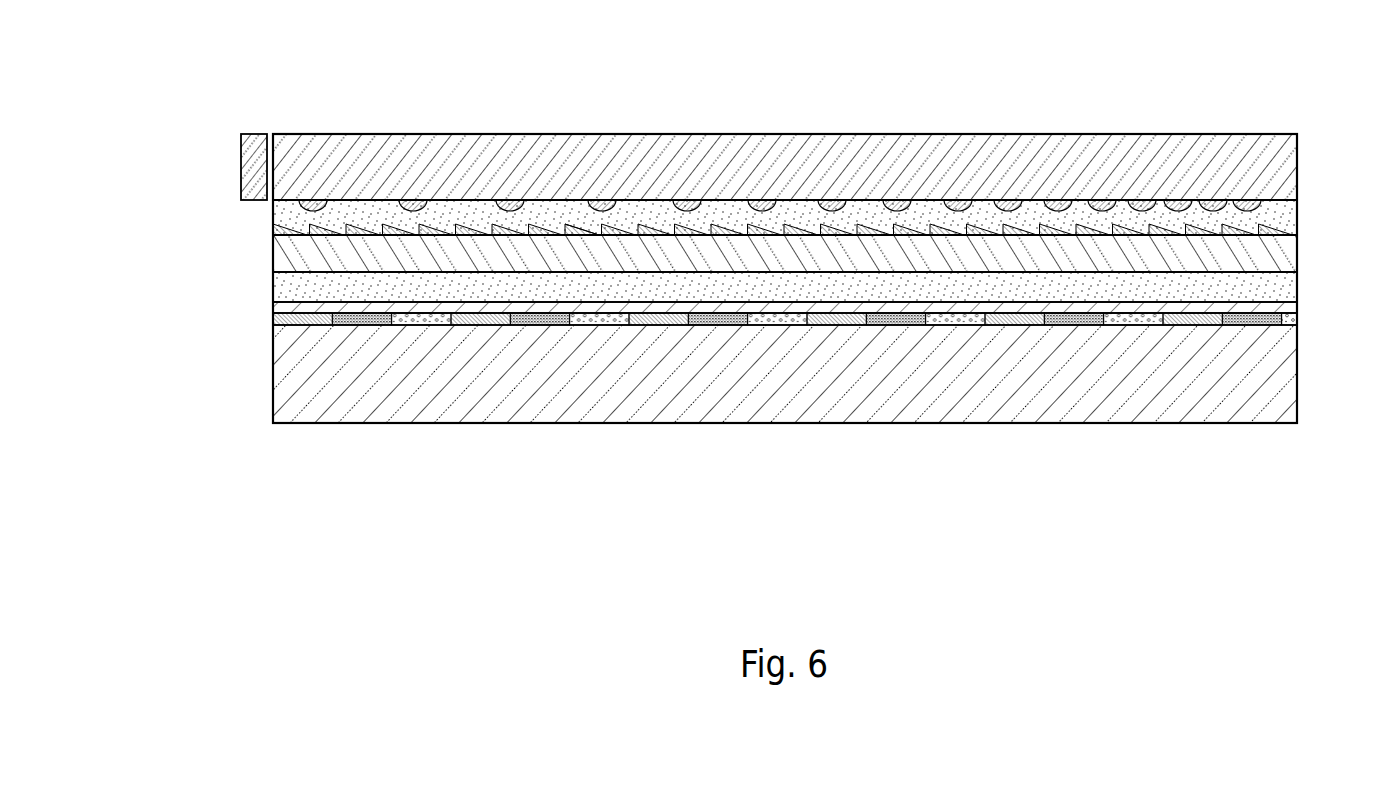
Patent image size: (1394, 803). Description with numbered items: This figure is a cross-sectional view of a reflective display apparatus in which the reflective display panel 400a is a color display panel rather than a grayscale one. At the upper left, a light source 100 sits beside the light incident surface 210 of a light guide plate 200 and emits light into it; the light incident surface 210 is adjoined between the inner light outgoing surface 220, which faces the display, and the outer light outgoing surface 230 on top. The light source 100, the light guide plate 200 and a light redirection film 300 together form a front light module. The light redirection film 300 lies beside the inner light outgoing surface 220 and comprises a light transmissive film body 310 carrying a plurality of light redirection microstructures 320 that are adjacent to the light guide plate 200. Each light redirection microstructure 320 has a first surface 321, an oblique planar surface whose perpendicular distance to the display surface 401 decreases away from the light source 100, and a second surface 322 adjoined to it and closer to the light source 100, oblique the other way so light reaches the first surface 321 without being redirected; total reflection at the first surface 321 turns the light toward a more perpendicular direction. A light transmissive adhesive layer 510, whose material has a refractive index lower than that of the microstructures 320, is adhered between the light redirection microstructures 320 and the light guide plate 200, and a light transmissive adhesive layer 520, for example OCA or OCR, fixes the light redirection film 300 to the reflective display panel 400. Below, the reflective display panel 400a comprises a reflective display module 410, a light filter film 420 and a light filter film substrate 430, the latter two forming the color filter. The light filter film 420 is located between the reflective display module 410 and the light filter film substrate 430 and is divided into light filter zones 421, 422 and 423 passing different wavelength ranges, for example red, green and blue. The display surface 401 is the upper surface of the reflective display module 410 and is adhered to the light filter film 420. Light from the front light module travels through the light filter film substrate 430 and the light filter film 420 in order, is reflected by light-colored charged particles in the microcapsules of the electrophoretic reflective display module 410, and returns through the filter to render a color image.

The light source 100 is at (241, 137).
The light guide plate 200 is at (1248, 143).
The light incident surface 210 is at (292, 137).
The inner light outgoing surface 220 is at (421, 202).
The outer light outgoing surface 230 is at (988, 134).
The light redirection film 300 is at (717, 174).
The light transmissive film body 310 is at (273, 262).
The light redirection microstructures 320 is at (273, 232).
The first surface 321 is at (613, 230).
The second surface 322 is at (600, 230).
The reflective display panel 400 is at (744, 381).
The reflective display panel 400a is at (741, 381).
The display surface 401 is at (1292, 313).
The reflective display module 410 is at (739, 374).
The light filter film 420 is at (739, 393).
The light filter zone 421 is at (300, 325).
The light filter zone 422 is at (358, 325).
The light filter zone 423 is at (420, 325).
The light filter film substrate 430 is at (273, 305).
The light transmissive adhesive layer 510 is at (1288, 214).
The light transmissive adhesive layer 520 is at (1290, 280).